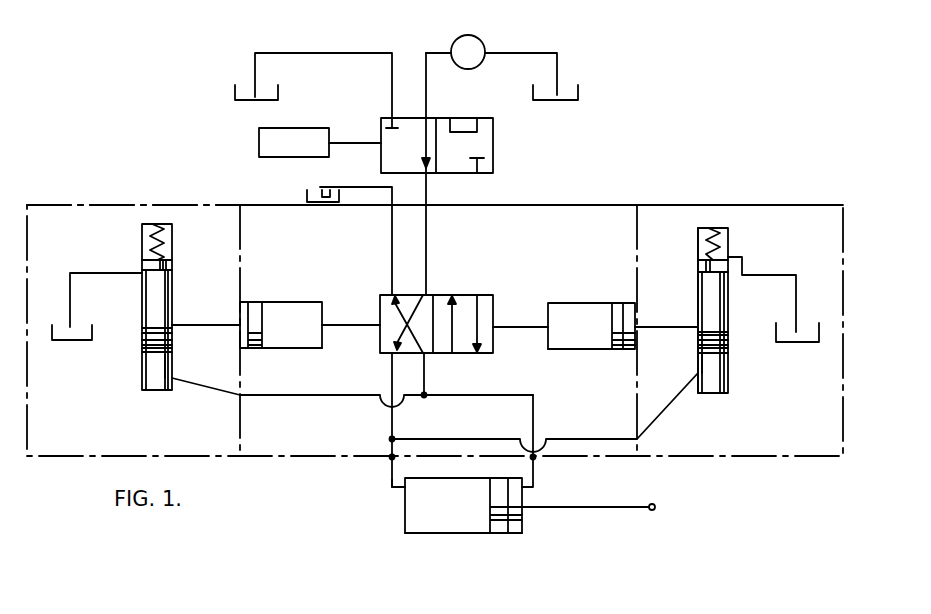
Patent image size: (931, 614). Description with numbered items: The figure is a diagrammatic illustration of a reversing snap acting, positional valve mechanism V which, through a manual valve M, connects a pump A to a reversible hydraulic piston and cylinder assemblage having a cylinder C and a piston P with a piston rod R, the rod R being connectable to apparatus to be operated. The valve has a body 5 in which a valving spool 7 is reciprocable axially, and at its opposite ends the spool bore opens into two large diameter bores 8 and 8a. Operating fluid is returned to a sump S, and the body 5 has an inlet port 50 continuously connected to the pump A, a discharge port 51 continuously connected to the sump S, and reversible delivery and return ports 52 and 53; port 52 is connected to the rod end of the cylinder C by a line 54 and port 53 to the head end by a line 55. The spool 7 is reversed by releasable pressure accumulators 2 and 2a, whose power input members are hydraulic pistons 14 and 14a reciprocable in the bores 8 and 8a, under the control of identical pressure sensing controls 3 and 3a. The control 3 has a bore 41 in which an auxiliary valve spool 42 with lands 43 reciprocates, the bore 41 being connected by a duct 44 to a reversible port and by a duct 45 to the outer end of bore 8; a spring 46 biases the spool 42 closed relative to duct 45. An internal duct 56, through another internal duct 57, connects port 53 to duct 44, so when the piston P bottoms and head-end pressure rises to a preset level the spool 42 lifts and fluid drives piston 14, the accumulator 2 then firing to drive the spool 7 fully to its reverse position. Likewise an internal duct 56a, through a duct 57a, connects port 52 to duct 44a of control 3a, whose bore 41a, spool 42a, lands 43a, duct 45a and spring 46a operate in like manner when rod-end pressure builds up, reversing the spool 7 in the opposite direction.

The pressure accumulator 2 is at (568, 300).
The pressure accumulator 2a is at (256, 300).
The pressure sensing control 3 is at (790, 206).
The pressure sensing control 3a is at (129, 203).
The valve body 5 is at (561, 203).
The valving spool 7 is at (483, 295).
The large diameter bore 8 is at (580, 350).
The large diameter bore 8a is at (308, 348).
The hydraulic piston 14 is at (618, 350).
The hydraulic piston 14a is at (255, 349).
The bore 41 is at (698, 370).
The bore 41a is at (172, 358).
The auxiliary valve spool 42 is at (728, 378).
The auxiliary valve spool 42a is at (148, 378).
The lands 43 is at (728, 333).
The lands 43a is at (142, 330).
The duct 44 is at (655, 421).
The duct 44a is at (217, 396).
The duct 45 is at (650, 326).
The duct 45a is at (216, 325).
The spring 46 is at (720, 256).
The spring 46a is at (150, 240).
The inlet port 50 is at (423, 295).
The discharge port 51 is at (393, 300).
The reversible delivery and return port 52 is at (424, 353).
The reversible delivery and return port 53 is at (391, 353).
The line 54 is at (535, 478).
The line 55 is at (400, 487).
The internal duct 56 is at (389, 424).
The internal duct 56a is at (534, 432).
The internal duct 57 is at (445, 439).
The duct 57a is at (265, 397).
The pump A is at (488, 46).
The manual valve M is at (498, 157).
The sump S is at (310, 192).
The cylinder C is at (455, 537).
The piston P is at (488, 521).
The piston rod R is at (605, 508).
The valve mechanism V is at (723, 207).